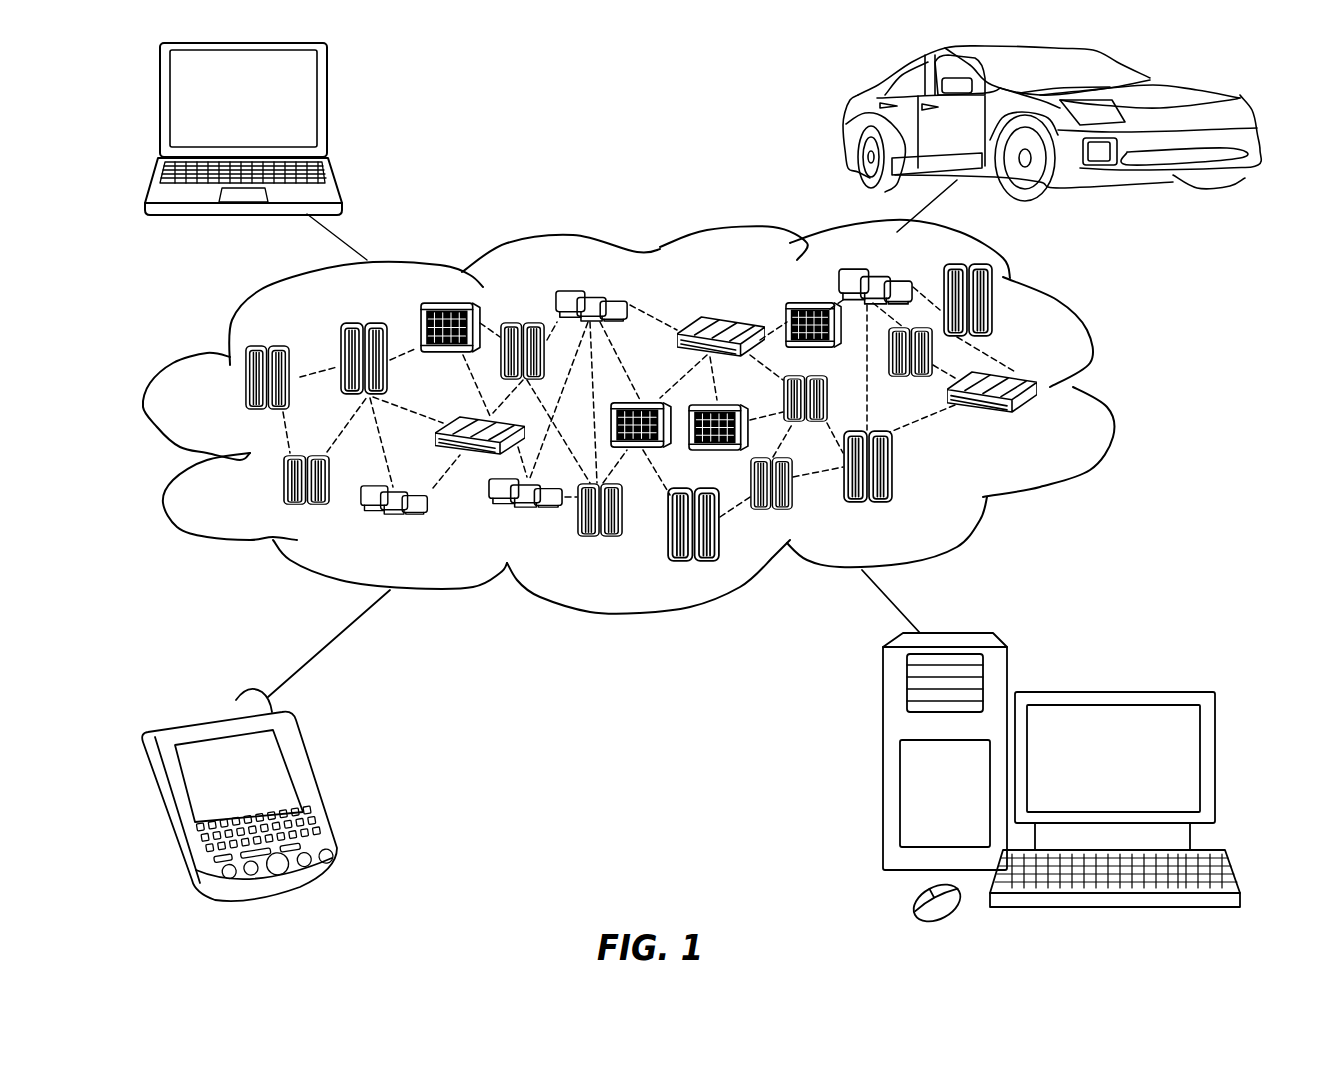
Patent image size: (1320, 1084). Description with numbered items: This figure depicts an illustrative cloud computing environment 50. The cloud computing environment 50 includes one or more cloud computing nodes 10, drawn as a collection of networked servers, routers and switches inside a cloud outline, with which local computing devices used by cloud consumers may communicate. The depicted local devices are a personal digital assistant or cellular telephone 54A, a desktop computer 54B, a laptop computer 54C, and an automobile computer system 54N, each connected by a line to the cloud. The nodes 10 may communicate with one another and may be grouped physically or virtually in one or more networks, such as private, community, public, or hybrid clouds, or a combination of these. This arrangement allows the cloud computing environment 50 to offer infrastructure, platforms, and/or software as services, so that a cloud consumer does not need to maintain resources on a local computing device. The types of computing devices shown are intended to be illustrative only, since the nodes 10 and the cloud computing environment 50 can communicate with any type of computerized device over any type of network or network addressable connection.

The laptop computer 54C is at (327, 108).
The automobile computer system 54N is at (848, 122).
The personal digital assistant or cellular telephone 54A is at (315, 790).
The desktop computer 54B is at (1110, 690).
The cloud computing environment 50 is at (1107, 392).
The cloud computing node 10 is at (1040, 422).